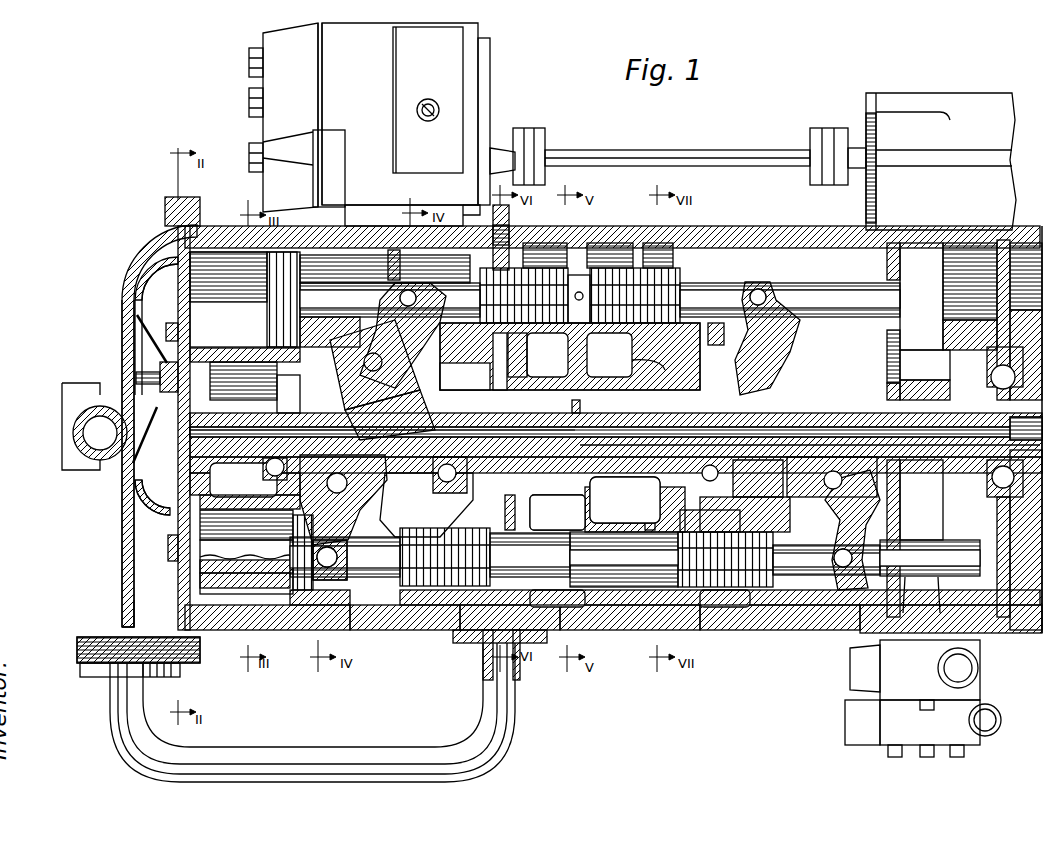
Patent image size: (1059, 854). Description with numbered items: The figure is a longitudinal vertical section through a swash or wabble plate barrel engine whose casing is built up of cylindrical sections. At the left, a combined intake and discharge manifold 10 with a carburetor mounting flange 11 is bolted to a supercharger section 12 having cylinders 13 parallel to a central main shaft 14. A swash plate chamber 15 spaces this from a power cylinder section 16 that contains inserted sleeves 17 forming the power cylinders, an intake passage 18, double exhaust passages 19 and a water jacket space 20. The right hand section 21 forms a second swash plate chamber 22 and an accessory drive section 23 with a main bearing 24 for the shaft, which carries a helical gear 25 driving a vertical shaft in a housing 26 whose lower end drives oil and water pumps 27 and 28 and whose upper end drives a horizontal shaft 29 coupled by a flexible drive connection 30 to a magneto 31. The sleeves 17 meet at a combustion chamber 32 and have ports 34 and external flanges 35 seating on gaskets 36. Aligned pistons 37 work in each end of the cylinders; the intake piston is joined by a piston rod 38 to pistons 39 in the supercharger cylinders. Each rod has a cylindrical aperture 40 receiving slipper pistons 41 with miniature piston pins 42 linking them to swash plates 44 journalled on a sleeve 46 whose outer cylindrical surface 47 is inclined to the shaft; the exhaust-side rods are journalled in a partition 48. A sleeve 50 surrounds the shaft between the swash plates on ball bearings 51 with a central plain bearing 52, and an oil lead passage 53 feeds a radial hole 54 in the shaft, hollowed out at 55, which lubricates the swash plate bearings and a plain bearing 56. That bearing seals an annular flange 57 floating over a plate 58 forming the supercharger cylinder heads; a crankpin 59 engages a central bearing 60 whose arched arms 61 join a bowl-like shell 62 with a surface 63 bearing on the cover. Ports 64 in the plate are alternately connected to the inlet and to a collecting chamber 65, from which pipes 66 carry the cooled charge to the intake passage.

The combined intake and discharge manifold 10 is at (124, 258).
The carburetor mounting flange 11 is at (55, 395).
The supercharger section 12 is at (232, 630).
The cylinders 13 is at (305, 625).
The main shaft 14 is at (426, 497).
The swash plate chamber 15 is at (462, 628).
The power cylinder section 16 is at (608, 630).
The sleeves 17 is at (560, 675).
The intake passage 18 is at (500, 370).
The exhaust passages 19 is at (660, 357).
The water jacket space 20 is at (581, 431).
The right hand section 21 is at (782, 628).
The second swash plate chamber 22 is at (820, 628).
The accessory drive section 23 is at (948, 538).
The main bearing 24 is at (1010, 352).
The helical gear 25 is at (940, 283).
The housing 26 is at (945, 370).
The oil pump 27 is at (915, 670).
The water pump 28 is at (923, 728).
The horizontal shaft 29 is at (862, 150).
The flexible drive connection 30 is at (672, 150).
The magneto 31 is at (432, 80).
The combustion chamber 32 is at (596, 265).
The ports 34 is at (509, 220).
The external flanges 35 is at (700, 516).
The gaskets 36 is at (630, 520).
The pistons 37 is at (760, 530).
The piston rod 38 is at (455, 305).
The pistons 39 is at (278, 290).
The cylindrical aperture 40 is at (392, 282).
The slipper pistons 41 is at (335, 590).
The miniature piston pins 42 is at (340, 575).
The swash or wabble plates 44 is at (380, 325).
The sleeve 46 is at (345, 385).
The outer cylindrical surface 47 is at (390, 400).
The partition 48 is at (898, 320).
The sleeve 50 is at (616, 435).
The ball bearings 51 is at (440, 485).
The plain bearing 52 is at (411, 432).
The oil lead passage 53 is at (625, 500).
The pin 54 is at (572, 405).
The hollowed out portion 55 is at (810, 434).
The supercharger valve plain bearing 56 is at (210, 483).
The annular flange 57 is at (168, 545).
The plate 58 is at (172, 323).
The crankpin 59 is at (170, 392).
The central bearing 60 is at (140, 375).
The arched arms 61 is at (150, 335).
The bowl-like shell 62 is at (160, 255).
The surface 63 is at (122, 300).
The ports 64 is at (175, 283).
The collecting chamber 65 is at (134, 592).
The pipes 66 is at (350, 752).